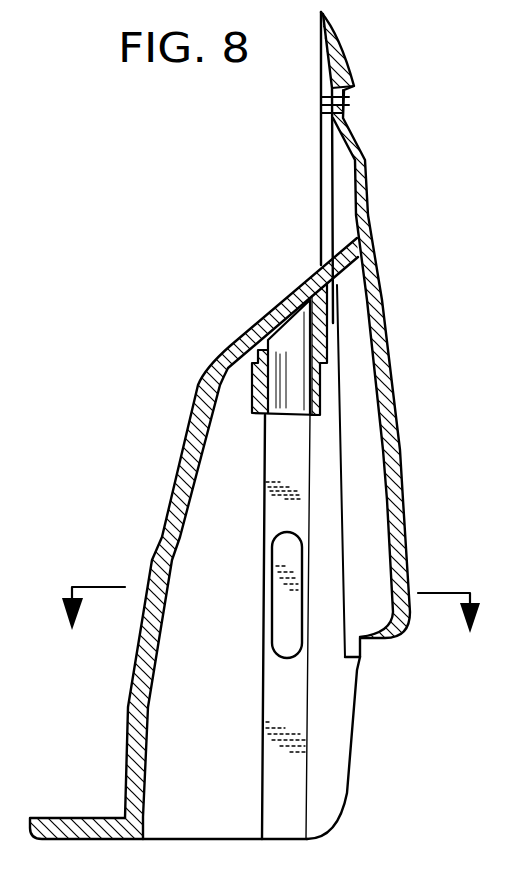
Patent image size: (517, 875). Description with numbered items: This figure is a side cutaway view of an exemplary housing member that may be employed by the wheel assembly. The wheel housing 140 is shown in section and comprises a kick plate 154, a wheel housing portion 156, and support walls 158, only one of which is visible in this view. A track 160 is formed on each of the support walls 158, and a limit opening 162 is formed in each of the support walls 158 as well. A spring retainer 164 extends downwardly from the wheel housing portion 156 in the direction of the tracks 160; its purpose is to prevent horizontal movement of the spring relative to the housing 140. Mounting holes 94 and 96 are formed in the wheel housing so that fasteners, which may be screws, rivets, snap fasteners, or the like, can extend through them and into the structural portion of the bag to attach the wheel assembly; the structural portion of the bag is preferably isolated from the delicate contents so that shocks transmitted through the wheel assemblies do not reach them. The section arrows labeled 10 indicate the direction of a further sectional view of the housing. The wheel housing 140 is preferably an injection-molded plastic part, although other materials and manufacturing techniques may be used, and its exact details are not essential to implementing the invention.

The section line 10 is at (271, 626).
The mounting hole 94 is at (349, 100).
The mounting hole 96 is at (62, 820).
The wheel housing 140 is at (245, 265).
The kick plate 154 is at (383, 342).
The wheel housing portion 156 is at (178, 463).
The support wall 158 is at (332, 740).
The track 160 is at (290, 692).
The limit opening 162 is at (280, 600).
The spring retainer 164 is at (262, 402).